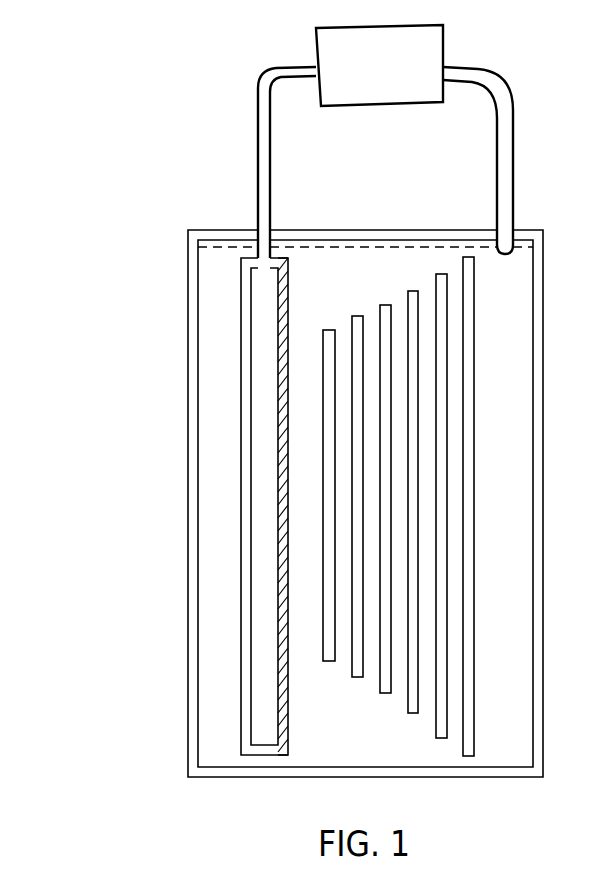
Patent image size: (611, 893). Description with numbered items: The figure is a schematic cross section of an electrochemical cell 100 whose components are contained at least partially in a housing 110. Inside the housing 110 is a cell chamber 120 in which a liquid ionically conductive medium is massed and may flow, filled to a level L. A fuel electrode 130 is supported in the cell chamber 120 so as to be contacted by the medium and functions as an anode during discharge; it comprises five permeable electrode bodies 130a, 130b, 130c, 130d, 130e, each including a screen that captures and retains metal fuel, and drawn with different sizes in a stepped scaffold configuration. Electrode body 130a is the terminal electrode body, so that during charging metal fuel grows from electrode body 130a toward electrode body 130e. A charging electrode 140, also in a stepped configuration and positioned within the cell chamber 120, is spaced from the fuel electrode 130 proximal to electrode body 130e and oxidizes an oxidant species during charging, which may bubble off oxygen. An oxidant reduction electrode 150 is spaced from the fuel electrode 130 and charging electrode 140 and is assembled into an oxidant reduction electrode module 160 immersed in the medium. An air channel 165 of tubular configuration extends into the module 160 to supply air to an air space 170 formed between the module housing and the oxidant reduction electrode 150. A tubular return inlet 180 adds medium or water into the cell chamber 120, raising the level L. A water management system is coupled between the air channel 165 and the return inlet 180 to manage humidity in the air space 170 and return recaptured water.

The electrochemical cell 100 is at (193, 193).
The housing 110 is at (398, 236).
The cell chamber 120 is at (315, 742).
The fuel electrode 130 is at (467, 756).
The permeable electrode body 130a is at (471, 270).
The permeable electrode body 130b is at (441, 275).
The permeable electrode body 130c is at (413, 291).
The permeable electrode body 130d is at (387, 305).
The permeable electrode body 130e is at (356, 316).
The charging electrode 140 is at (327, 343).
The oxidant reduction electrode 150 is at (282, 296).
The oxidant reduction electrode module 160 is at (243, 282).
The air channel 165 is at (263, 252).
The air space 170 is at (263, 310).
The return inlet 180 is at (514, 149).
The level L is at (529, 226).